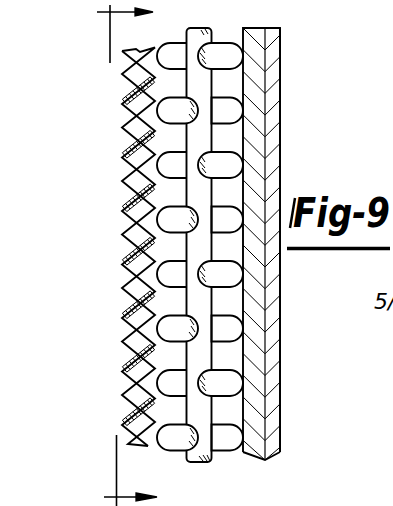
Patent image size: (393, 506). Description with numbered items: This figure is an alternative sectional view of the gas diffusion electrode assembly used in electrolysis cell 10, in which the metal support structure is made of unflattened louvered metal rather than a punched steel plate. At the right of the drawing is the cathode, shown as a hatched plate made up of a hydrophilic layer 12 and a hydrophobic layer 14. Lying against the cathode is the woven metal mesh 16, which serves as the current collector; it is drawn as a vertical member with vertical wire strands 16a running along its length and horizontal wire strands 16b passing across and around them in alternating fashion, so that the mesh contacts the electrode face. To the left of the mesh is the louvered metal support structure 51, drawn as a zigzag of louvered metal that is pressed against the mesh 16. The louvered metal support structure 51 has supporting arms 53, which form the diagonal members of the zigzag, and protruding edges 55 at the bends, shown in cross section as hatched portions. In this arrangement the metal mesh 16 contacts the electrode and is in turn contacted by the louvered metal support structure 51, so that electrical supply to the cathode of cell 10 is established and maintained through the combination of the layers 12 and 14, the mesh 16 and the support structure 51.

The electrolysis cell 10 is at (113, 255).
The hydrophilic layer 12 is at (259, 27).
The hydrophobic layer 14 is at (281, 38).
The metal mesh 16 is at (213, 24).
The vertical wire strands 16a is at (211, 87).
The horizontal wire strands 16b is at (130, 383).
The louvered metal support structure 51 is at (113, 115).
The supporting arms 53 is at (122, 294).
The protruding edges 55 is at (123, 215).